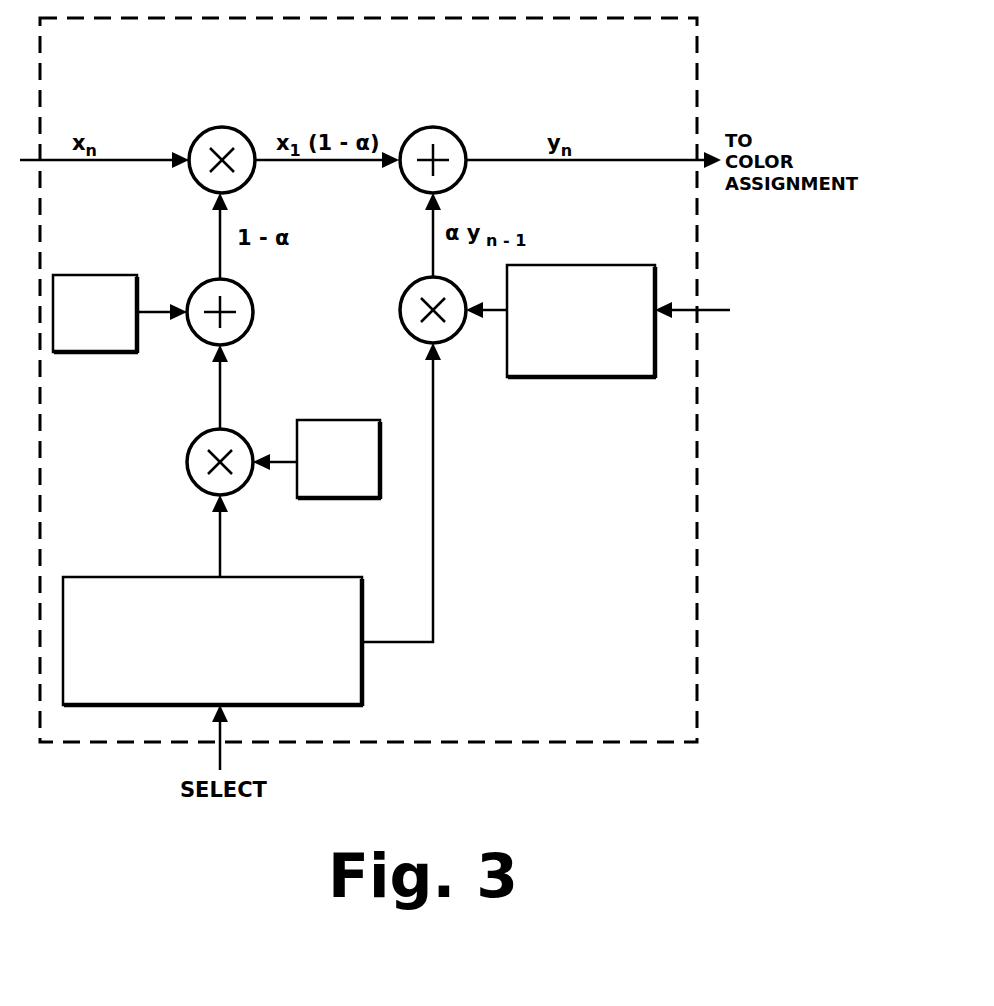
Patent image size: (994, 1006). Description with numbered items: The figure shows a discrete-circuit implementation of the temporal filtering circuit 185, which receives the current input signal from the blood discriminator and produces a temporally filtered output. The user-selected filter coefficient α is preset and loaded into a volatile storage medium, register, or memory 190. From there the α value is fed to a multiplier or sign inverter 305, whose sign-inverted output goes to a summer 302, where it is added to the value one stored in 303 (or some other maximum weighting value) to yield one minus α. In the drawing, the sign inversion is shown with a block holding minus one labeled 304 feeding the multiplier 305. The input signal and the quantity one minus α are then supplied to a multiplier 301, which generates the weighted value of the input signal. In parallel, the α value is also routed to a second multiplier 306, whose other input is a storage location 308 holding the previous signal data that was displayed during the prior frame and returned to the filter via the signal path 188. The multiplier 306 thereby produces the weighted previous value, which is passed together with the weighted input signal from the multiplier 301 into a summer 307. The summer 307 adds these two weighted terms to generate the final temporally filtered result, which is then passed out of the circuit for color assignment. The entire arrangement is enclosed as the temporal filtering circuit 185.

The temporal filtering circuit 185 is at (640, 710).
The signal path 188 is at (708, 306).
The filter coefficient α 190 is at (240, 689).
The multiplier 301 is at (246, 137).
The summer 302 is at (196, 288).
The stored value "1" 303 is at (88, 274).
The constant minus one block 304 is at (330, 419).
The sign inverter 305 is at (196, 438).
The multiplier 306 is at (412, 284).
The summer 307 is at (457, 137).
The storage location 308 is at (600, 365).